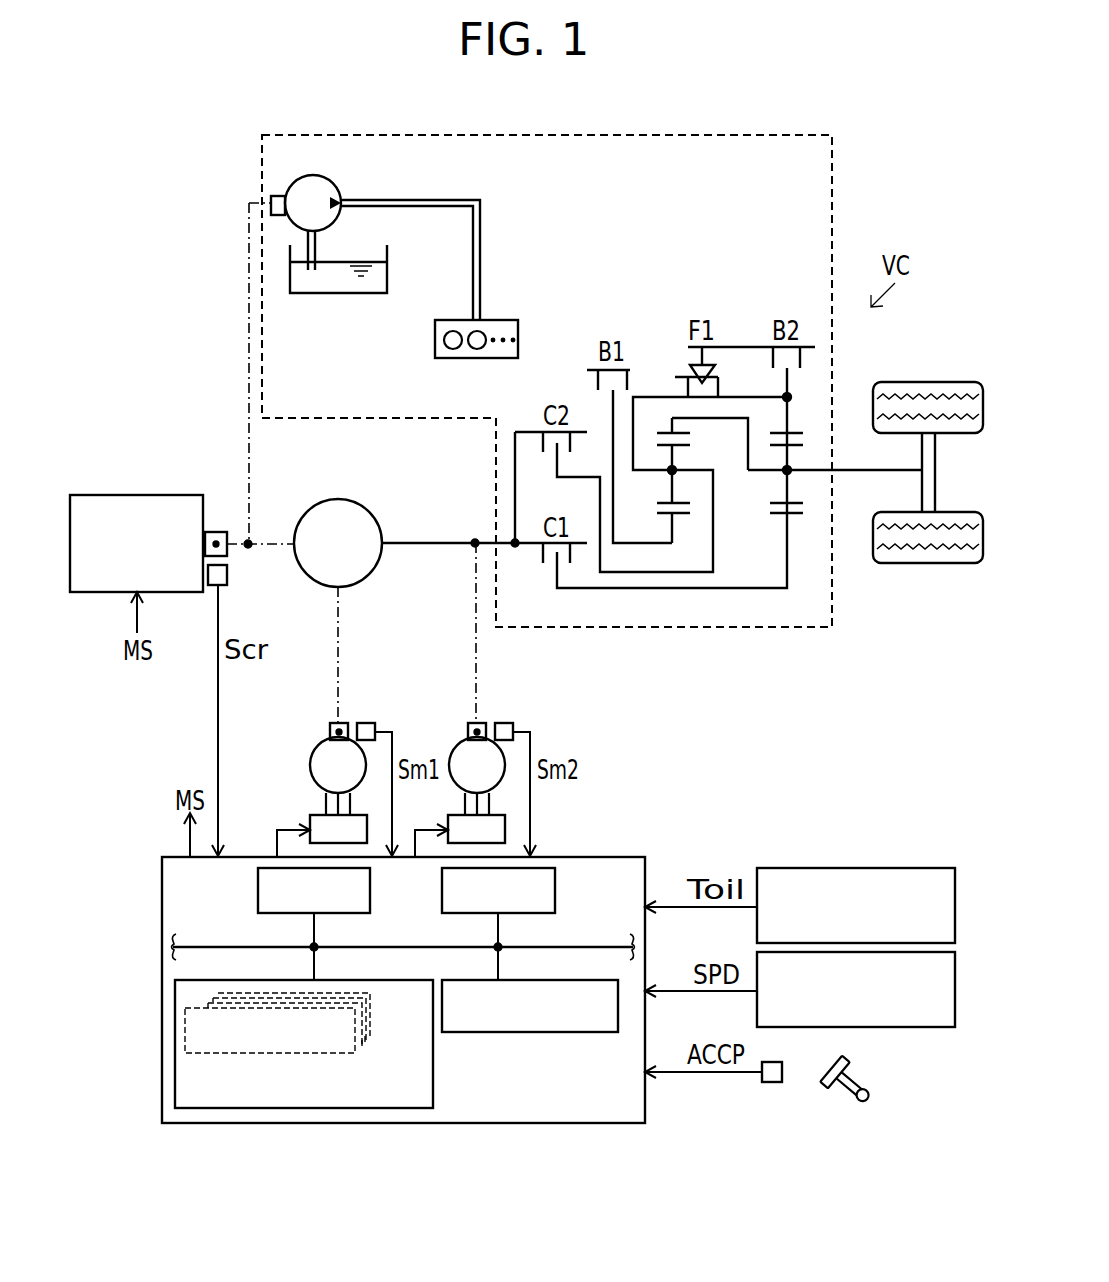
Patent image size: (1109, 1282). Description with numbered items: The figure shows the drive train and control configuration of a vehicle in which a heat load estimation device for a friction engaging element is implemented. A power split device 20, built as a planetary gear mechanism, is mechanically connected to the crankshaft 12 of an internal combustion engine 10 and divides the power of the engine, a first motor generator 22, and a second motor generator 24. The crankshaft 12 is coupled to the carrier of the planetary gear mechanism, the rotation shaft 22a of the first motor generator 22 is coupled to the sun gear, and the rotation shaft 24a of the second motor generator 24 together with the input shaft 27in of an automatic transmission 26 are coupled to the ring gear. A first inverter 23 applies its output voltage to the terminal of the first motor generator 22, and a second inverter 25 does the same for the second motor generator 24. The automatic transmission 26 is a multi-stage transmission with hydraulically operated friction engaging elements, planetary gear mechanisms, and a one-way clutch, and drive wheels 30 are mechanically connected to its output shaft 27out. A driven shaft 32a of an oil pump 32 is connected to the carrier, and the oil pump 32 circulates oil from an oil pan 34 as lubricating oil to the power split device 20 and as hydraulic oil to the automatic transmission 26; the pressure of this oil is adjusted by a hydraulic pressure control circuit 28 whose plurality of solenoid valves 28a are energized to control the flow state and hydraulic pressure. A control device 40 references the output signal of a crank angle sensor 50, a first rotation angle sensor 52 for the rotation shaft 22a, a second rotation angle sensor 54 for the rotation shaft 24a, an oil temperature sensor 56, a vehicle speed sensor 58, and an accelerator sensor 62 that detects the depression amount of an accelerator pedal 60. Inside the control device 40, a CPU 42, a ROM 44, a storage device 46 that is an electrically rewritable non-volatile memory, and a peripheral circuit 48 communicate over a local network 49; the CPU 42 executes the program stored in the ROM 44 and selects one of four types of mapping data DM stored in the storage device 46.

The internal combustion engine 10 is at (137, 495).
The crankshaft 12 is at (215, 532).
The power split device 20 is at (383, 513).
The first motor generator 22 is at (311, 762).
The rotation shaft of the first motor generator 22a is at (330, 733).
The first inverter 23 is at (367, 828).
The second motor generator 24 is at (452, 748).
The rotation shaft of the second motor generator 24a is at (470, 723).
The second inverter 25 is at (505, 828).
The automatic transmission 26 is at (832, 190).
The input shaft 27in is at (516, 548).
The output shaft 27out is at (807, 470).
The hydraulic pressure control circuit 28 is at (497, 320).
The solenoid valves 28a is at (453, 349).
The drive wheels 30 is at (928, 382).
The oil pump 32 is at (321, 176).
The driven shaft 32a is at (279, 196).
The oil pan 34 is at (388, 268).
The control device 40 is at (608, 857).
The central processing unit (CPU) 42 is at (372, 888).
The read only memory (ROM) 44 is at (557, 892).
The storage device 46 is at (372, 972).
The peripheral circuit 48 is at (520, 975).
The local network 49 is at (545, 940).
The crank angle sensor 50 is at (216, 585).
The first rotation angle sensor 52 is at (366, 723).
The second rotation angle sensor 54 is at (505, 723).
The oil temperature sensor 56 is at (882, 868).
The vehicle speed sensor 58 is at (910, 1027).
The accelerator pedal 60 is at (846, 1066).
The accelerator sensor 62 is at (780, 1062).
The mapping data DM is at (385, 1030).